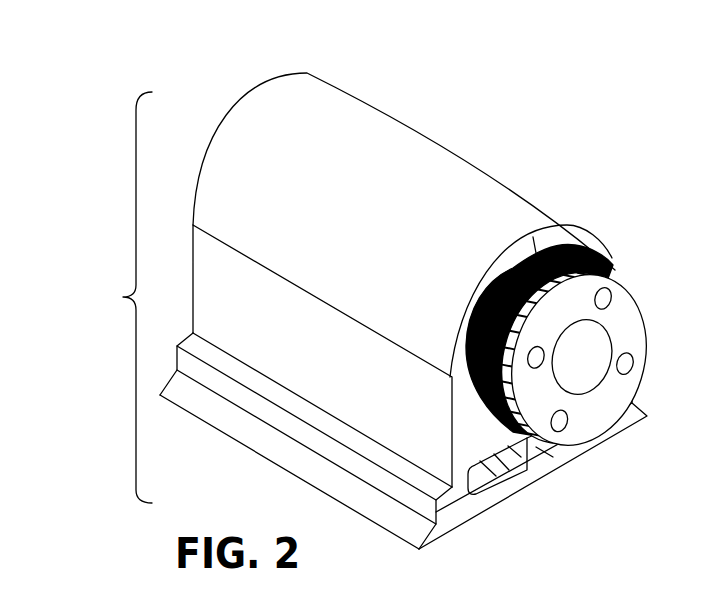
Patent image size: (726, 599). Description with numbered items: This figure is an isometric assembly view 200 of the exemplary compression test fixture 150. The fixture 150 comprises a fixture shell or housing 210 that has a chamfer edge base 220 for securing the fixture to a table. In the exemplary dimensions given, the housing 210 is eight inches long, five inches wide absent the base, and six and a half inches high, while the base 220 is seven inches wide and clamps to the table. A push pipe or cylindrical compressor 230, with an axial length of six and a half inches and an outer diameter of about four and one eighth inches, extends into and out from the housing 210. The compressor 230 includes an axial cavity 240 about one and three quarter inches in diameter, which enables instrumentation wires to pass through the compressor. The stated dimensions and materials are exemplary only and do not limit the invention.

The test fixture 150 is at (107, 297).
The isometric assembly view 200 is at (432, 292).
The fixture shell or housing 210 is at (367, 93).
The chamfer edge base 220 is at (248, 457).
The push pipe or cylindrical compressor 230 is at (626, 272).
The axial cavity 240 is at (589, 394).